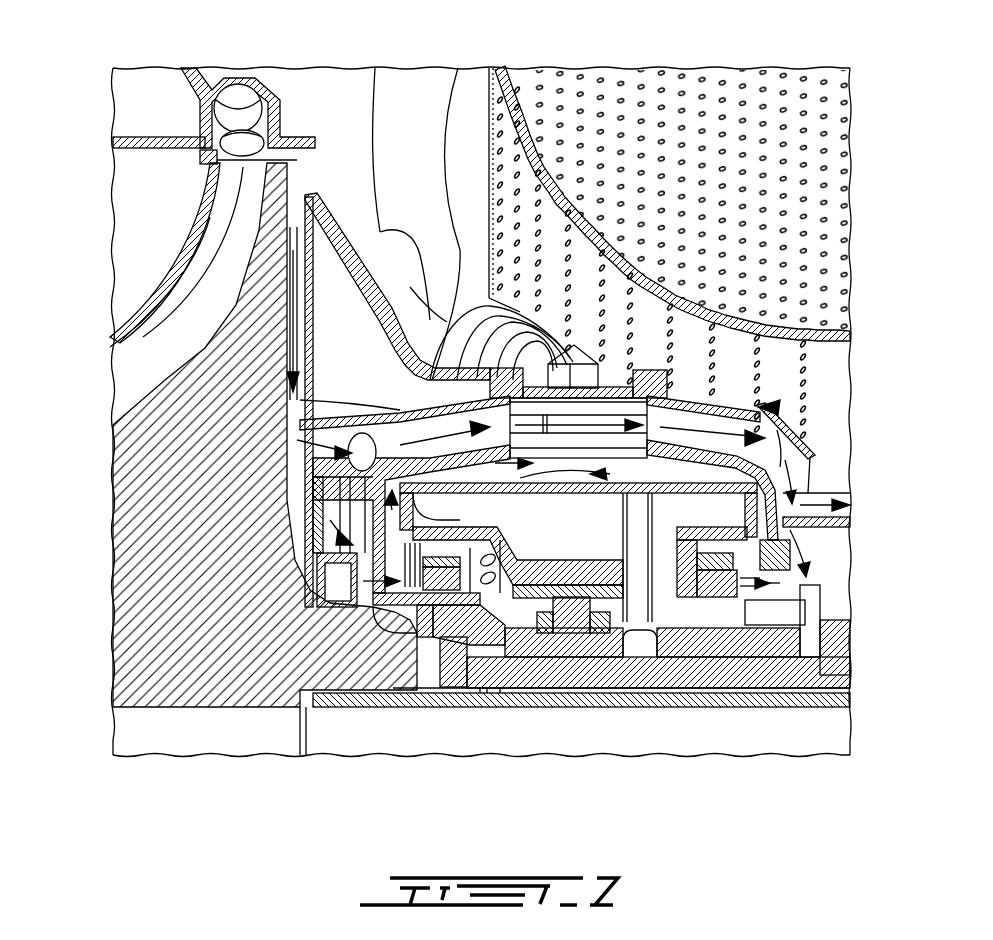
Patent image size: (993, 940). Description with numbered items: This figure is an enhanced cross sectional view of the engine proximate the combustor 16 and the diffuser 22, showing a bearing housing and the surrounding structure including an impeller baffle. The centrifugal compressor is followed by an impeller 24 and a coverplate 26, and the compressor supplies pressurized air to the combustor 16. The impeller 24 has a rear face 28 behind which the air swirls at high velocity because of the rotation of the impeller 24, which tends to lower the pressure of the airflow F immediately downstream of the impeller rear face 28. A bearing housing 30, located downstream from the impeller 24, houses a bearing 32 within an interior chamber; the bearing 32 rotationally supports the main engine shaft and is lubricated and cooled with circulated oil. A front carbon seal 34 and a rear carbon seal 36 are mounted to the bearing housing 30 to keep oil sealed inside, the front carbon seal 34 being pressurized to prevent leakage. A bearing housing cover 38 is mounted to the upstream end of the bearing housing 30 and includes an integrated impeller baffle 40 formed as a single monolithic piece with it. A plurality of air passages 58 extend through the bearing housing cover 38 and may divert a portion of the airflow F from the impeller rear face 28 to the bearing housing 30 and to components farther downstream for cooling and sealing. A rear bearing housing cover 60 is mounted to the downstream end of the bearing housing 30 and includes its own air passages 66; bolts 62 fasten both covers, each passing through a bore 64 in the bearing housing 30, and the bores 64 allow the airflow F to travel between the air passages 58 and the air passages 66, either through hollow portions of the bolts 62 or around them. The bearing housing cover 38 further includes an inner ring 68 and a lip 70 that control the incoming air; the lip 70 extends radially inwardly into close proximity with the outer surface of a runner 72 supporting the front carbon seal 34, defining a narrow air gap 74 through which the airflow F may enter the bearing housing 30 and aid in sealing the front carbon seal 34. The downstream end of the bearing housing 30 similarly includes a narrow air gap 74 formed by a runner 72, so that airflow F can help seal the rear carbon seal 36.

The combustor 16 is at (621, 133).
The diffuser 22 is at (238, 105).
The impeller 24 is at (167, 358).
The coverplate 26 is at (380, 232).
The rear face 28 is at (350, 545).
The bearing housing 30 is at (603, 383).
The bearing 32 is at (578, 625).
The front carbon seal 34 is at (433, 578).
The rear carbon seal 36 is at (735, 592).
The bearing housing cover 38 is at (462, 240).
The impeller baffle 40 is at (287, 335).
The air passages 58 is at (347, 457).
The rear bearing housing cover 60 is at (778, 408).
The bolts 62 is at (607, 420).
The bore 64 is at (580, 413).
The air passages 66 is at (800, 432).
The inner ring 68 is at (330, 550).
The lip 70 is at (292, 690).
The runner 72 is at (452, 620).
The narrow air gap 74 is at (395, 598).
The airflow F is at (165, 372).